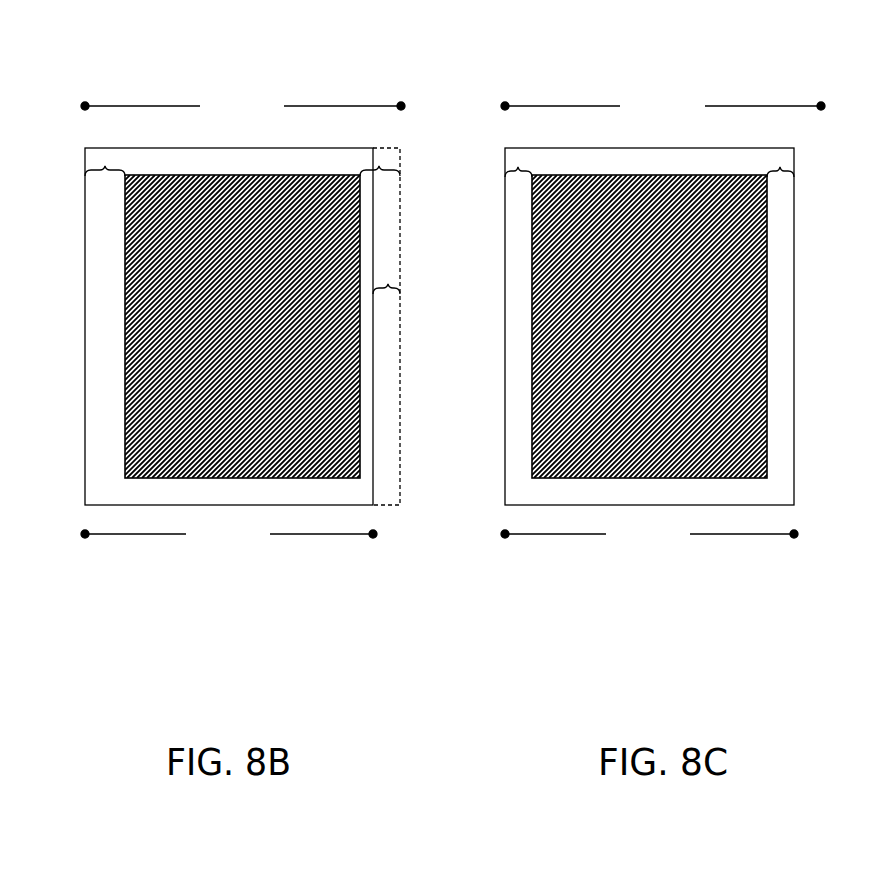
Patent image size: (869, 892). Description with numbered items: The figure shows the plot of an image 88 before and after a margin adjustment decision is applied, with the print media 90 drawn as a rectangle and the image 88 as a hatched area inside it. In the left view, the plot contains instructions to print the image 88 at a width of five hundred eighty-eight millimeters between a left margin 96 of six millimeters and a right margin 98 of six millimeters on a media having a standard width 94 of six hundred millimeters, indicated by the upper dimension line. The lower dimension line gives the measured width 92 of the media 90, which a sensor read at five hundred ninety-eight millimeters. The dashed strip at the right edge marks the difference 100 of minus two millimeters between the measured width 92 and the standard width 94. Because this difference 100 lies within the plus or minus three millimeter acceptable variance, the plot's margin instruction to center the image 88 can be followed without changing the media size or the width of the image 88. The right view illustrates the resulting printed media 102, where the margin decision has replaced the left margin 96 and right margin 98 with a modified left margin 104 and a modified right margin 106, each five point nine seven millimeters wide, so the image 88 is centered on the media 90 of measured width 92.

In FIG. 8B, the image 88 is at (135, 410).
In FIG. 8C, the image 88 is at (535, 410).
In FIG. 8B, the print media 90 is at (77, 482).
In FIG. 8B, the measured width 92 is at (90, 527).
In FIG. 8C, the measured width 92 is at (540, 527).
In FIG. 8B, the standard width 94 is at (192, 97).
In FIG. 8C, the standard width 94 is at (612, 97).
In FIG. 8B, the left margin 96 is at (97, 158).
In FIG. 8B, the right margin 98 is at (371, 157).
In FIG. 8B, the difference 100 is at (380, 277).
In FIG. 8C, the printed media 102 is at (492, 477).
In FIG. 8C, the modified left margin 104 is at (510, 159).
In FIG. 8C, the modified right margin 106 is at (772, 159).